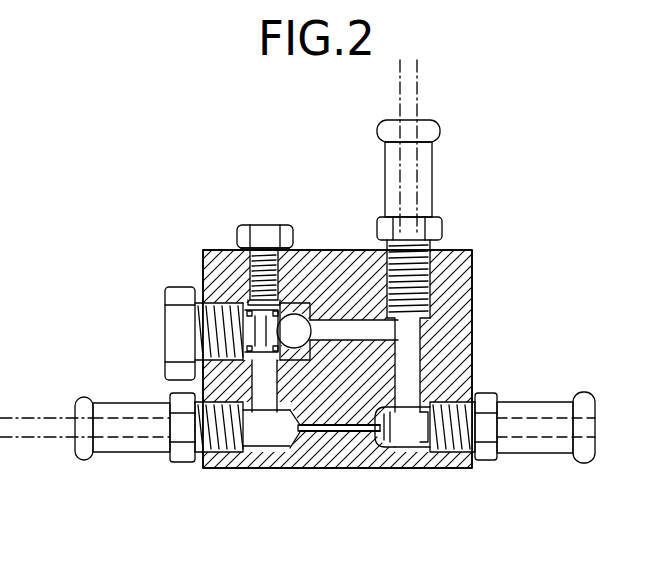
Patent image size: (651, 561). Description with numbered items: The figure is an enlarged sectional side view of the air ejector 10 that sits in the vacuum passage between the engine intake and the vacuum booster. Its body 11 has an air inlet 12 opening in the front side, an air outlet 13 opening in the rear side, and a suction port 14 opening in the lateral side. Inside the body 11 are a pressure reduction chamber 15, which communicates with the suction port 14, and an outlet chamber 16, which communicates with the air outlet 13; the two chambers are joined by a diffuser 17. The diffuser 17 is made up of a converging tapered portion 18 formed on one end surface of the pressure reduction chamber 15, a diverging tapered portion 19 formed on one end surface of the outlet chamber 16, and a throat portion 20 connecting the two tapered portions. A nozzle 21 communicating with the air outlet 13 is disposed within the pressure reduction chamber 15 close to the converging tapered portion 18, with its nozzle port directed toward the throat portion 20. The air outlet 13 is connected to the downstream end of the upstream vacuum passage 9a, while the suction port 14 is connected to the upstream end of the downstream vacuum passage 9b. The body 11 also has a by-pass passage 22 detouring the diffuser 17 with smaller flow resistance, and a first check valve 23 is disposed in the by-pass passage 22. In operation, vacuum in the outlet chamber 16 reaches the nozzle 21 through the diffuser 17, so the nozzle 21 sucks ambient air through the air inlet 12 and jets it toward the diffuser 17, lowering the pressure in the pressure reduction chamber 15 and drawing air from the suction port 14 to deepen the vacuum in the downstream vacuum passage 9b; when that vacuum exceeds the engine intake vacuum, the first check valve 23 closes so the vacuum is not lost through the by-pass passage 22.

The upstream vacuum passage 9a is at (34, 418).
The downstream vacuum passage 9b is at (419, 87).
The air ejector 10 is at (316, 470).
The body 11 is at (472, 322).
The air inlet 12 is at (512, 425).
The air outlet 13 is at (116, 420).
The suction port 14 is at (410, 188).
The pressure reduction chamber 15 is at (405, 448).
The outlet chamber 16 is at (258, 444).
The diffuser 17 is at (386, 383).
The converging tapered portion 18 is at (383, 420).
The diverging tapered portion 19 is at (298, 424).
The throat portion 20 is at (332, 424).
The nozzle 21 is at (383, 436).
The by-pass passage 22 is at (366, 333).
The first check valve 23 is at (300, 316).